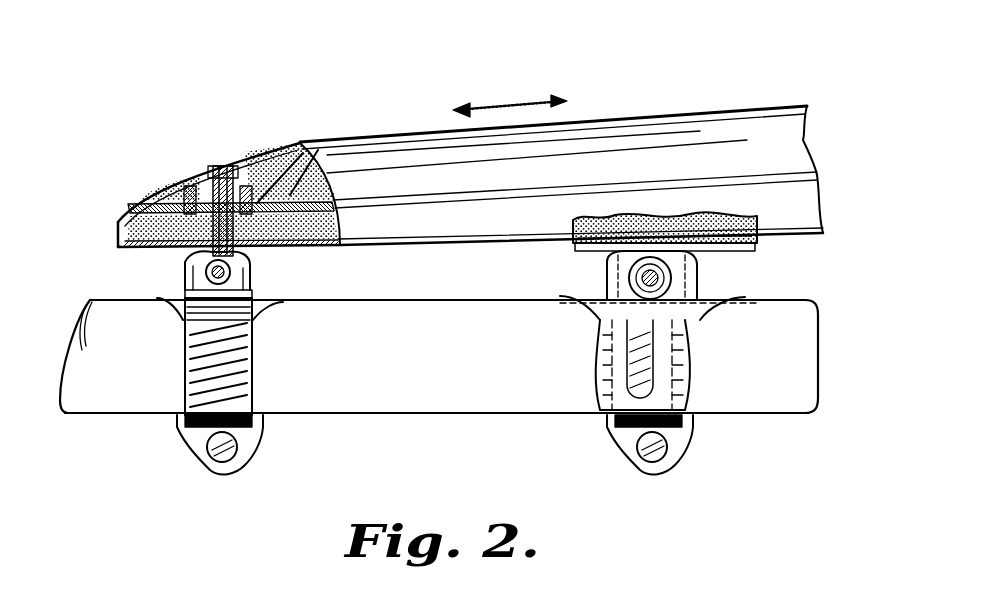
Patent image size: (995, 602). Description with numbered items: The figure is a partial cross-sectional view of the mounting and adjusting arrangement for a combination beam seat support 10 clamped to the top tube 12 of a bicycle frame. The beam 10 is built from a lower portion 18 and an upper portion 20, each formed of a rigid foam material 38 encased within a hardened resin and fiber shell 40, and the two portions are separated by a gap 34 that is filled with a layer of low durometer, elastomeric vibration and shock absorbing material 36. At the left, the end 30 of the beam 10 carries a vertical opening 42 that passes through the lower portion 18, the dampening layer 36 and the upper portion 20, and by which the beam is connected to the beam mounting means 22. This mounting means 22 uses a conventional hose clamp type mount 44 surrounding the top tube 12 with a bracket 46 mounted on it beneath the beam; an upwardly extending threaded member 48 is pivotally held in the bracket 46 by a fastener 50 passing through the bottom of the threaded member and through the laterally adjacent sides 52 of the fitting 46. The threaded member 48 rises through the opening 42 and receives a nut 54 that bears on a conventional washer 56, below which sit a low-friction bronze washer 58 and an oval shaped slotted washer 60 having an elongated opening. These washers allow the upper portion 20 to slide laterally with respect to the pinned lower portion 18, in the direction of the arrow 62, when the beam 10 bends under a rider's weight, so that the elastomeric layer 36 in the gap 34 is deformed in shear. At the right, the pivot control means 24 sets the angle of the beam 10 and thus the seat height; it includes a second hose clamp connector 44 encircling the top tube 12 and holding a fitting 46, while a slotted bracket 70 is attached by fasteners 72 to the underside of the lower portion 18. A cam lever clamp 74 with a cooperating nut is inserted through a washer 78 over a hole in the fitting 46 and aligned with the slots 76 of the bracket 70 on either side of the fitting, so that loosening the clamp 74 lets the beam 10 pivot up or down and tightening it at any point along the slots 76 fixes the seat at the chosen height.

The combination beam seat support 10 is at (424, 112).
The top tube 12 is at (426, 413).
The lower portion 18 is at (805, 212).
The upper portion 20 is at (775, 105).
The beam mounting means 22 is at (172, 318).
The pivot control means 24 is at (718, 322).
The end 30 is at (118, 206).
The gap 34 is at (820, 175).
The vibration and shock absorbing material 36 is at (115, 225).
The rigid foam material 38 is at (355, 248).
The hardened resin and fiber shell 40 is at (155, 190).
The vertical opening 42 is at (238, 163).
The hose clamp type mount 44 is at (245, 462).
The bracket 46 is at (283, 300).
The threaded member 48 is at (205, 250).
The fastener 50 is at (188, 268).
The laterally adjacent sides 52 is at (262, 258).
The nut 54 is at (207, 166).
The washer 56 is at (235, 158).
The washer 58 is at (290, 152).
The oval shaped slotted washer 60 is at (322, 141).
The arrow 62 is at (503, 103).
The slotted bracket 70 is at (590, 405).
The fasteners 72 is at (755, 247).
The cam lever clamp 74 is at (606, 290).
The slots 76 is at (688, 368).
The washer 78 is at (690, 280).